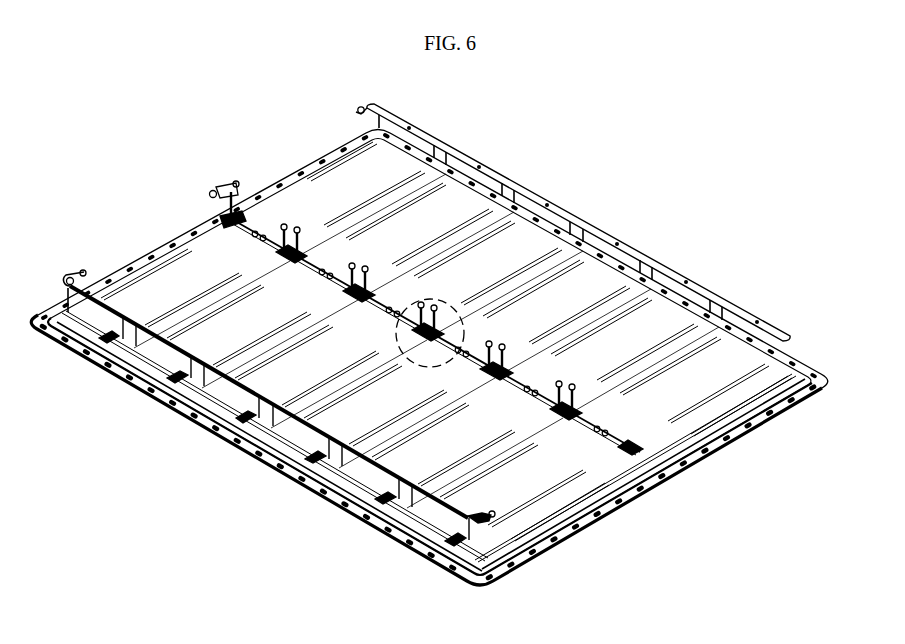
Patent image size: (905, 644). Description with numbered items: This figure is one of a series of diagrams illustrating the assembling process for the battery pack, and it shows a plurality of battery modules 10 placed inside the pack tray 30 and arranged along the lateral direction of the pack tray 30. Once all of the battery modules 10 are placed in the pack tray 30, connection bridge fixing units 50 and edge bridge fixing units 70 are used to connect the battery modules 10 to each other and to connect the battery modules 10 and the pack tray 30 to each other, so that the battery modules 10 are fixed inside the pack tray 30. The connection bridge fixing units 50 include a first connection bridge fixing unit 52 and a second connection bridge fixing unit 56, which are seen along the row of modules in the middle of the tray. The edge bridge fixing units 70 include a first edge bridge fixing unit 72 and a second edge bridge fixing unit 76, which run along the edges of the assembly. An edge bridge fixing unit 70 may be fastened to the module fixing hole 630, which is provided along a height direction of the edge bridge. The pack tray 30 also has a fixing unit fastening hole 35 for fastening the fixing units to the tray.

The battery module 10 is at (667, 318).
The pack tray 30 is at (812, 378).
The fixing unit fastening hole 35 is at (497, 545).
The connection bridge fixing unit 50 is at (210, 180).
The first connection bridge fixing unit 52 is at (292, 235).
The second connection bridge fixing unit 56 is at (228, 184).
The edge bridge fixing unit 70 is at (65, 262).
The first edge bridge fixing unit 72 is at (456, 512).
The second edge bridge fixing unit 76 is at (622, 184).
The module fixing hole 630 is at (338, 475).